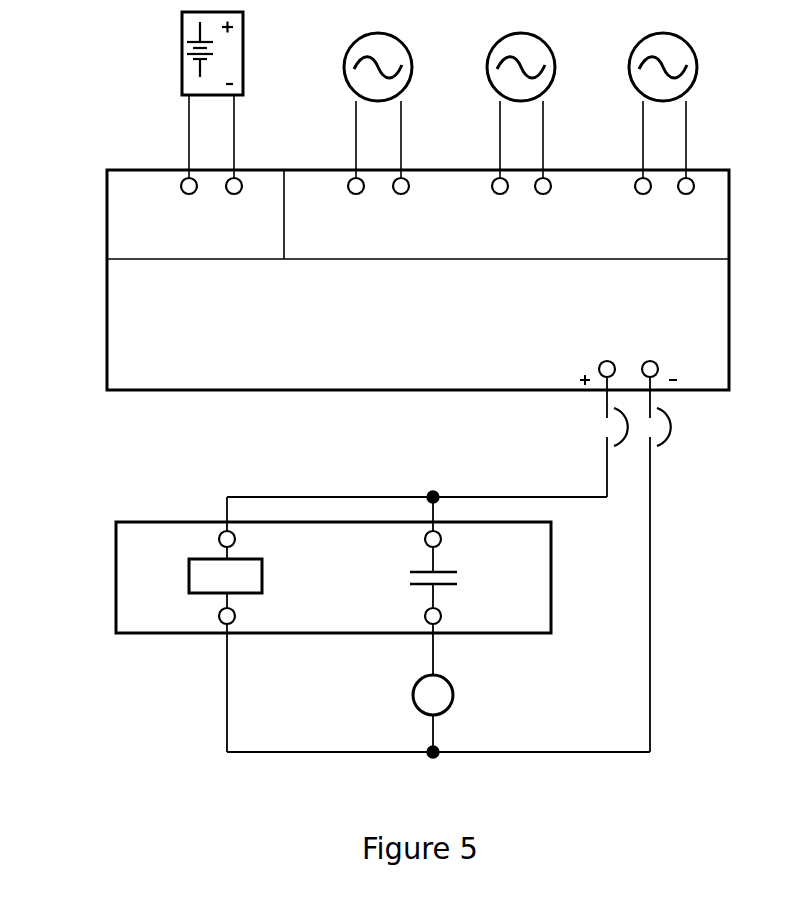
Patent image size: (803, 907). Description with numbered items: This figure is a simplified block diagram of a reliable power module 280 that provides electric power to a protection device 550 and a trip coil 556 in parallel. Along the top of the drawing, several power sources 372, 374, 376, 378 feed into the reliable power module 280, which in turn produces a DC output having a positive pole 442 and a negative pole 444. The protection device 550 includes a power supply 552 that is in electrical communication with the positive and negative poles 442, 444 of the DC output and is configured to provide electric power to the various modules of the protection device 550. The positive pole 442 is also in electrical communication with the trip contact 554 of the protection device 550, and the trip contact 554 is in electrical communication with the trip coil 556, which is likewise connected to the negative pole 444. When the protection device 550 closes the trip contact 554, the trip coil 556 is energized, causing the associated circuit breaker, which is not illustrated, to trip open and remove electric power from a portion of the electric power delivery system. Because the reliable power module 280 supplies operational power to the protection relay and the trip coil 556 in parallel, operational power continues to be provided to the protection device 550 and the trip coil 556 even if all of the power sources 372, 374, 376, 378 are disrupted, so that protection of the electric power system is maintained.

The reliable power module 280 is at (106, 212).
The power source 372 is at (181, 38).
The power source 374 is at (346, 54).
The power source 376 is at (488, 52).
The power source 378 is at (631, 52).
The positive pole 442 is at (602, 358).
The negative pole 444 is at (656, 358).
The protection device 550 is at (114, 534).
The power supply 552 is at (188, 578).
The trip contact 554 is at (412, 577).
The trip coil 556 is at (412, 697).